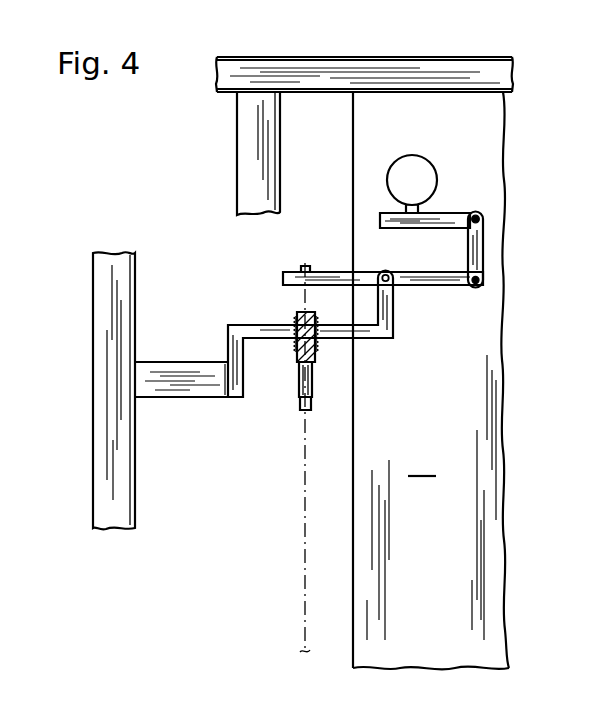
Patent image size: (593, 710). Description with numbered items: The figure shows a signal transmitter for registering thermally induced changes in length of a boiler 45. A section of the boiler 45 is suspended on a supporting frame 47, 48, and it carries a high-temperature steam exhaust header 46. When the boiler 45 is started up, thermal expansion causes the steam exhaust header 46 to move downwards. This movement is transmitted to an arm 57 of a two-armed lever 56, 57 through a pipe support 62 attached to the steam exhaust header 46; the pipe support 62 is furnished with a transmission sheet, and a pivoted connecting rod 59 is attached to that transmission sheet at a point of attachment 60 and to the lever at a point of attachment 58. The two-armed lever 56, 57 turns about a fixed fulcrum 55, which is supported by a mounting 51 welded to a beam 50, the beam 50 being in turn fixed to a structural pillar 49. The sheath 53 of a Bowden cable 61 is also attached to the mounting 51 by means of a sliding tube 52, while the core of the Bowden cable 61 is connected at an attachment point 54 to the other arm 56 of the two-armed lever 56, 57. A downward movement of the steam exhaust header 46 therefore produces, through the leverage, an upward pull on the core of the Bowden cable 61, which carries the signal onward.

The boiler 45 is at (431, 381).
The steam exhaust header 46 is at (432, 167).
The supporting frame 47 is at (322, 93).
The supporting frame 48 is at (281, 160).
The structural pillar 49 is at (136, 291).
The beam 50 is at (170, 398).
The mounting 51 is at (264, 325).
The sliding tube 52 is at (297, 361).
The sheath 53 is at (300, 403).
The attachment point 54 is at (303, 270).
The fixed fulcrum 55 is at (385, 271).
The arm of two-armed lever 56 is at (329, 272).
The arm of two-armed lever 57 is at (439, 286).
The point of attachment 58 is at (484, 282).
The connecting rod 59 is at (468, 249).
The point of attachment 60 is at (481, 218).
The Bowden cable 61 is at (304, 488).
The pipe support 62 is at (424, 208).